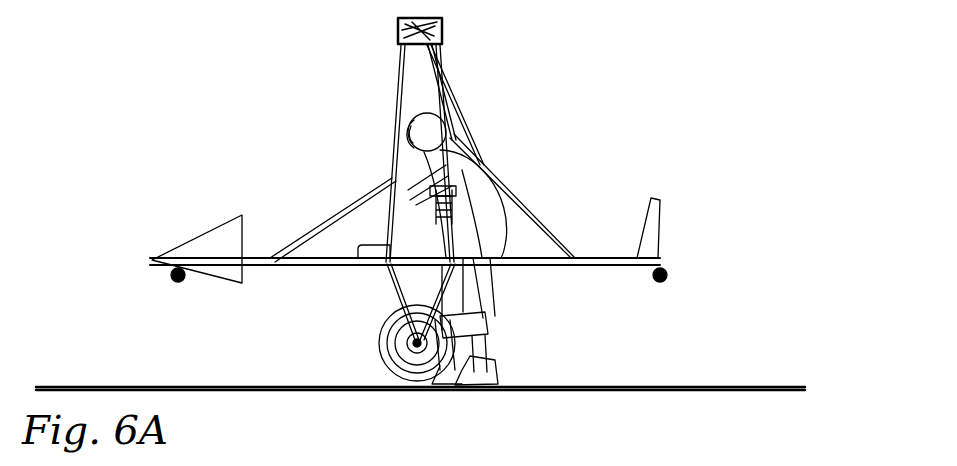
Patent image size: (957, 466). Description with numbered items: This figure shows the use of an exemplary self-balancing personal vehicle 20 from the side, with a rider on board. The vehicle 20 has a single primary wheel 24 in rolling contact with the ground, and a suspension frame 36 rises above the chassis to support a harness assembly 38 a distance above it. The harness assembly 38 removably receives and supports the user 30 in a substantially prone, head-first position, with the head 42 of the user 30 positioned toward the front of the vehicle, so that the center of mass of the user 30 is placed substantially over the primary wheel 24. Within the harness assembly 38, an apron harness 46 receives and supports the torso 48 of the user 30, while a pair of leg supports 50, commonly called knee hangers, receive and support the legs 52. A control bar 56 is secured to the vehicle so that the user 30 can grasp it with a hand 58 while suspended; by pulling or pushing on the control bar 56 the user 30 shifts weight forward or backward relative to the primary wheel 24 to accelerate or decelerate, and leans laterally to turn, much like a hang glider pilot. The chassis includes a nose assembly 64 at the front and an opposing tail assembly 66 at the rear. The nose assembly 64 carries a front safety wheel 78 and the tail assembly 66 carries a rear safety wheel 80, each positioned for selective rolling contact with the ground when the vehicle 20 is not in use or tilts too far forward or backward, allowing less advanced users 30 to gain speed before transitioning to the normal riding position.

The self-balancing personal vehicle 20 is at (300, 90).
The primary wheel 24 is at (380, 345).
The user 30 is at (490, 165).
The suspension frame 36 is at (400, 56).
The harness assembly 38 is at (427, 234).
The head 42 is at (453, 108).
The apron harness 46 is at (443, 193).
The torso 48 is at (483, 185).
The leg supports 50 is at (483, 314).
The legs 52 is at (470, 358).
The control bar 56 is at (362, 258).
The hand 58 is at (465, 266).
The nose assembly 64 is at (167, 216).
The tail assembly 66 is at (628, 198).
The front safety wheel 78 is at (178, 278).
The rear safety wheel 80 is at (662, 278).